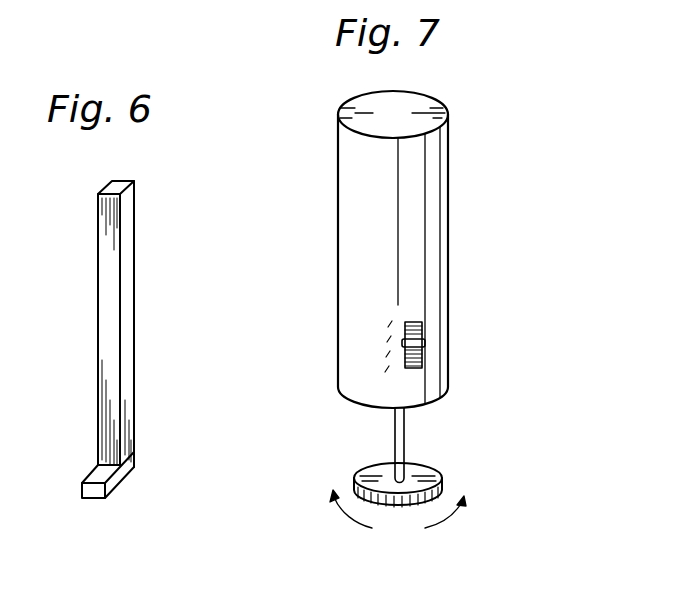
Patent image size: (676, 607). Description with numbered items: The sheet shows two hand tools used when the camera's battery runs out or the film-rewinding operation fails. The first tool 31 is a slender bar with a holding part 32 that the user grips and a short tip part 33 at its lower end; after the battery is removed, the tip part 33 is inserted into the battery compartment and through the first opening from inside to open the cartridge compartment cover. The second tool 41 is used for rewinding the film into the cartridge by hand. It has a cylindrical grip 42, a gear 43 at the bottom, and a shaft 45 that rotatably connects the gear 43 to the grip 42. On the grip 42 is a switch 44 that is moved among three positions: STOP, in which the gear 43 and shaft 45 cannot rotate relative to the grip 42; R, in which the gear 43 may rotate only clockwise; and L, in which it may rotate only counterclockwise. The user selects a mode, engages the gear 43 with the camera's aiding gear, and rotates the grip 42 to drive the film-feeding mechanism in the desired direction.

In FIG. 6, the first tool 31 is at (182, 356).
In FIG. 6, the holding part 32 is at (122, 231).
In FIG. 6, the tip part 33 is at (117, 481).
In FIG. 7, the second tool 41 is at (475, 309).
In FIG. 7, the grip 42 is at (437, 177).
In FIG. 7, the gear 43 is at (440, 484).
In FIG. 7, the switch 44 is at (422, 346).
In FIG. 7, the shaft 45 is at (405, 433).